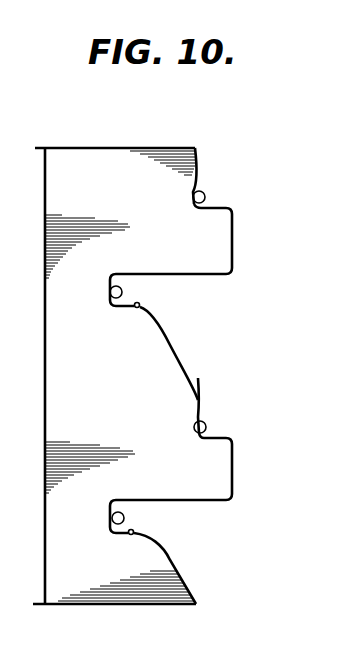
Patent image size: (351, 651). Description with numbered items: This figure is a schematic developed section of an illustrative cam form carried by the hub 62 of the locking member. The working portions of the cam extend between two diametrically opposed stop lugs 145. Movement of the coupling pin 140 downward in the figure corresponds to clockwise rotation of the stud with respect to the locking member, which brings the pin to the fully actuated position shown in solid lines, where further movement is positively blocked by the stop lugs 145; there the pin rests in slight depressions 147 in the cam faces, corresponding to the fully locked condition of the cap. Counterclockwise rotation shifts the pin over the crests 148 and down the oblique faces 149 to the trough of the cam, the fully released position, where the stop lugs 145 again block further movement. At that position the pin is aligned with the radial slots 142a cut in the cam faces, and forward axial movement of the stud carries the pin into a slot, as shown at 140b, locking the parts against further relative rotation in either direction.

The hub 62 is at (64, 419).
The coupling pin 140 is at (205, 195).
The coupling pin in channel position 140b is at (110, 309).
The radial slot 142a is at (140, 311).
The stop lug 145 is at (233, 248).
The depression 147 is at (192, 201).
The crest 148 is at (193, 175).
The oblique face 149 is at (182, 358).